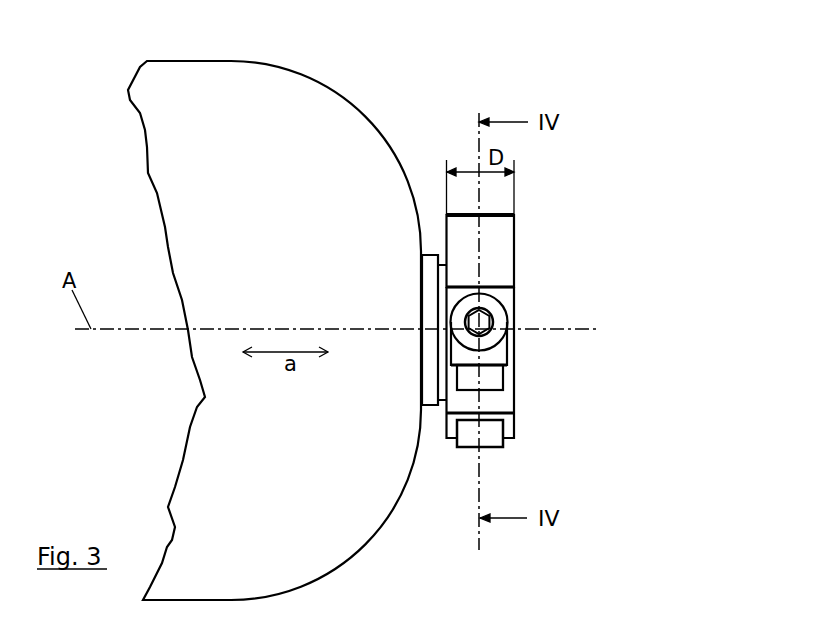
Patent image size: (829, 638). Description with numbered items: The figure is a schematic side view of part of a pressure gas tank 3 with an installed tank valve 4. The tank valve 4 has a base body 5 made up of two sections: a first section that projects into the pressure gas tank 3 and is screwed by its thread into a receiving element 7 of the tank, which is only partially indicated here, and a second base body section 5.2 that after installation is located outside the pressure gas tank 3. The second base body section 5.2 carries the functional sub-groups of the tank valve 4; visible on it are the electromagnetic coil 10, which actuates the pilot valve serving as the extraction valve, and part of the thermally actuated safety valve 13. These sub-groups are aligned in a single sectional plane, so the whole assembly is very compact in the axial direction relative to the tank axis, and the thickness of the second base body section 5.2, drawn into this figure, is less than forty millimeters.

The pressure gas tank 3 is at (243, 110).
The tank valve 4 is at (532, 288).
The base body 5 is at (519, 399).
The second base body section 5.2 is at (500, 254).
The receiving element 7 is at (430, 270).
The electromagnetic coil 10 is at (497, 310).
The thermally actuated safety valve 13 is at (471, 432).